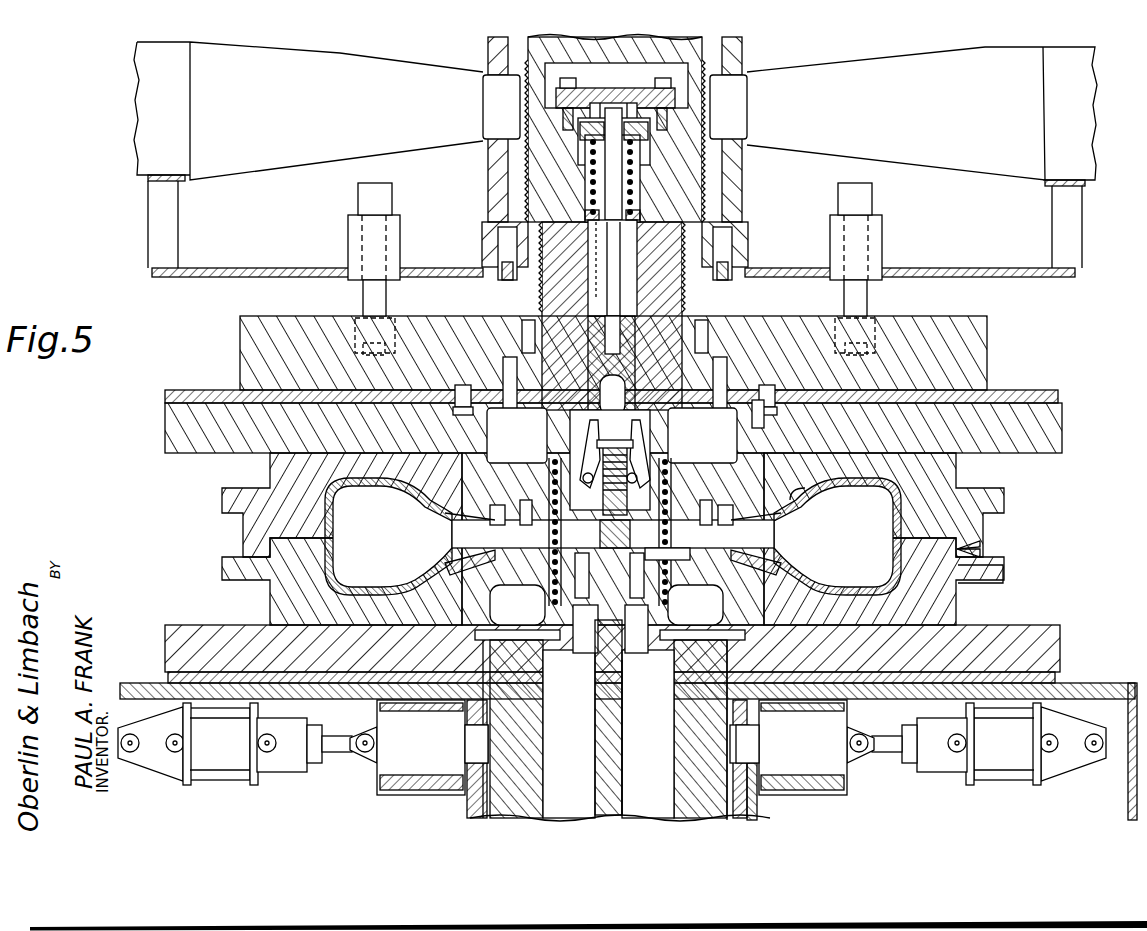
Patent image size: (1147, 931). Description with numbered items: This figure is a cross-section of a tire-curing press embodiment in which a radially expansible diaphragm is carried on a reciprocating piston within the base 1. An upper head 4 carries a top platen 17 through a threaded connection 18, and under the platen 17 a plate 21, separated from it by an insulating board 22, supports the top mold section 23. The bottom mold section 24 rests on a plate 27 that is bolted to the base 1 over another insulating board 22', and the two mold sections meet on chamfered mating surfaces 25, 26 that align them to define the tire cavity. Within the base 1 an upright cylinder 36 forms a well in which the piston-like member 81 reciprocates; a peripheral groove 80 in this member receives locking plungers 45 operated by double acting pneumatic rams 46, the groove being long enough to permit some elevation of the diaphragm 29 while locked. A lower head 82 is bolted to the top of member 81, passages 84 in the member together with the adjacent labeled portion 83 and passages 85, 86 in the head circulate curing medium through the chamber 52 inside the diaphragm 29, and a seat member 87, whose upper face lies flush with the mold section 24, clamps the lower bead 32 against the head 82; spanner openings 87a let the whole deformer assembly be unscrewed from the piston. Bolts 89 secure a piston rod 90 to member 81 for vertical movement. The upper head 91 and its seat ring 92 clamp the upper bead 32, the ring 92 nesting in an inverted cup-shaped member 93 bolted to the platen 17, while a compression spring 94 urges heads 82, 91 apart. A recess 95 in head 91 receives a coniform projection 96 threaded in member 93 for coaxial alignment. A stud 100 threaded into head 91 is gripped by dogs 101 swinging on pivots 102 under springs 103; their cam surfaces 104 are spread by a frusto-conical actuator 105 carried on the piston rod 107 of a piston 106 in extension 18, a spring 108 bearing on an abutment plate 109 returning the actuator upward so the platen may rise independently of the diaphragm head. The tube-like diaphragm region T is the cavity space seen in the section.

The base 1 is at (1130, 685).
The upper head 4 is at (267, 268).
The top platen 17 is at (987, 341).
The threaded connection / extension 18 is at (684, 298).
The plate 21 is at (1062, 439).
The insulating board 22 is at (615, 380).
The insulating board 22' is at (627, 678).
The top mold section 23 is at (1004, 498).
The bottom mold section 24 is at (1004, 575).
The chamfered mating surface 25 is at (958, 550).
The chamfered mating surface 26 is at (981, 552).
The plate 27 is at (1061, 645).
The diaphragm 29 is at (825, 531).
The beads 32 is at (727, 527).
The cylinder 36 is at (757, 823).
The locking plungers 45 is at (415, 765).
The pneumatic rams 46 is at (225, 775).
The chamber 52 is at (878, 534).
The peripheral groove 80 is at (477, 802).
The piston-like member 81 is at (684, 785).
The lower head 82 is at (700, 557).
The sleeve 83 is at (690, 731).
The passages 84 is at (528, 729).
The passage 85 is at (683, 593).
The passage 86 is at (517, 605).
The seat member 87 is at (458, 567).
The openings 87a is at (407, 580).
The bolts 89 is at (583, 557).
The piston rod 90 is at (597, 760).
The upper head 91 is at (517, 523).
The seat ring 92 is at (717, 484).
The cup-shaped member 93 is at (764, 427).
The compression spring 94 is at (552, 528).
The recess 95 is at (673, 467).
The coniform projection 96 is at (542, 470).
The stud 100 is at (618, 498).
The dogs 101 is at (583, 460).
The pivots 102 is at (582, 478).
The springs 103 is at (612, 435).
The cam surfaces 104 is at (611, 395).
The actuator 105 is at (636, 353).
The piston 106 is at (617, 104).
The piston rod 107 is at (615, 264).
The spring 108 is at (633, 194).
The abutment plate 109 is at (592, 216).
The glass tube T is at (355, 508).